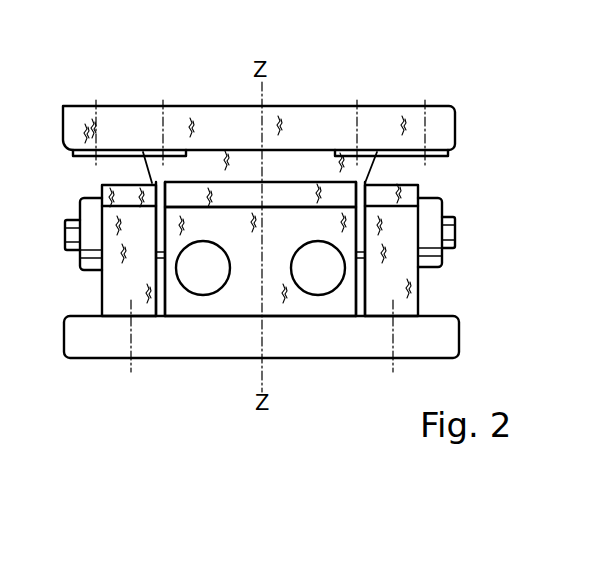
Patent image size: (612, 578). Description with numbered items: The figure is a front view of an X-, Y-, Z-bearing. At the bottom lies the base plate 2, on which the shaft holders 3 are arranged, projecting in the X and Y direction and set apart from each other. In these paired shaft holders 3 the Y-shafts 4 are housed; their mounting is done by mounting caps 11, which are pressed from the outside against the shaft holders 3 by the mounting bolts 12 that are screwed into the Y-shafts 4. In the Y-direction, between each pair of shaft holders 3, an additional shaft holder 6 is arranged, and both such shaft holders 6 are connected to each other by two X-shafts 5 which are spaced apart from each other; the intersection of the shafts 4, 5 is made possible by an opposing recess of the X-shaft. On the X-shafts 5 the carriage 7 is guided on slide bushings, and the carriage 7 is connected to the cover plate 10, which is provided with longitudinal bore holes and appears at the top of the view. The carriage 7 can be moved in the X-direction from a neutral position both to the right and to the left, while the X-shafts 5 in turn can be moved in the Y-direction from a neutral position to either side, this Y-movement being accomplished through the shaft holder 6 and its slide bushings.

The base plate 2 is at (382, 347).
The shaft holder 3 is at (122, 295).
The Y-shaft 4 is at (50, 237).
The X-shaft 5 is at (203, 278).
The shaft holder 6 is at (235, 292).
The carriage 7 is at (358, 170).
The cover plate 10 is at (340, 122).
The mounting cap 11 is at (425, 245).
The mounting bolt 12 is at (457, 229).